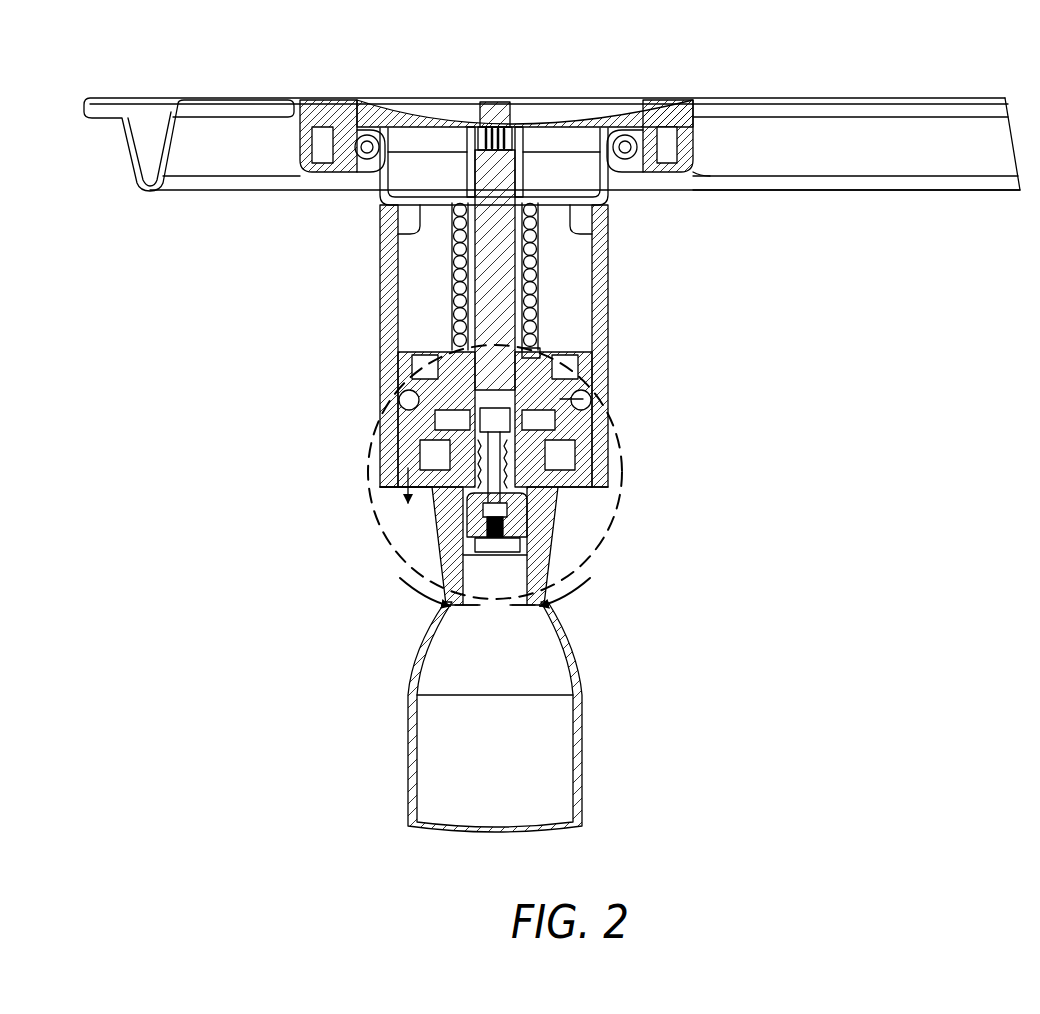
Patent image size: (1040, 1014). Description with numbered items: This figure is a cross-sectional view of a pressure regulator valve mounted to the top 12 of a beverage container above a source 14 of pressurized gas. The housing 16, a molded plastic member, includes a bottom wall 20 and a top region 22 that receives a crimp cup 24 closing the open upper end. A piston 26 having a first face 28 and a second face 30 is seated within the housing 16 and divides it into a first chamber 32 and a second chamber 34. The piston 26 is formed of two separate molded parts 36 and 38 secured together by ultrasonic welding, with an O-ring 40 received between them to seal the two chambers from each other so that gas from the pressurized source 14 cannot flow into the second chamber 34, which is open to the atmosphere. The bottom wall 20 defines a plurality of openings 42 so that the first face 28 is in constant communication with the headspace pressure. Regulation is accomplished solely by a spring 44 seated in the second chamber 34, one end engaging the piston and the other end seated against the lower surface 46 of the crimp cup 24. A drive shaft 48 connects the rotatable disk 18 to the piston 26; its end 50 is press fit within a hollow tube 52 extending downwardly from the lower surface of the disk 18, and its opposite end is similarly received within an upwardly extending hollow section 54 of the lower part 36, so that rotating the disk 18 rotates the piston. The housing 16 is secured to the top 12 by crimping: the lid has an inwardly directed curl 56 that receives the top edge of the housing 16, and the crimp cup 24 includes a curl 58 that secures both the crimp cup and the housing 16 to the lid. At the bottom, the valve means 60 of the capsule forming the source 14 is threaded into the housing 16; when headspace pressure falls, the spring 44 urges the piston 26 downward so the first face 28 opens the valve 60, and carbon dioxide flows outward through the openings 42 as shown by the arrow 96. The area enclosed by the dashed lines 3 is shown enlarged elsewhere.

The top of the container 12 is at (203, 97).
The source of pressurized gas 14 is at (582, 760).
The housing 16 is at (608, 292).
The rotatable disk 18 is at (632, 110).
The bottom wall 20 is at (567, 497).
The top region 22 is at (393, 150).
The crimp cup 24 is at (606, 241).
The piston 26 is at (595, 387).
The first face 28 is at (577, 430).
The second face 30 is at (563, 350).
The first chamber 32 is at (407, 453).
The second chamber 34 is at (415, 308).
The lower part of the piston 36 is at (400, 420).
The upper part of the piston 38 is at (405, 362).
The O-ring 40 is at (607, 403).
The openings 42 is at (383, 486).
The spring 44 is at (450, 268).
The lower surface of the crimp cup 46 is at (408, 243).
The drive shaft 48 is at (500, 247).
The end of the drive shaft 50 is at (507, 160).
The hollow tube 52 is at (467, 160).
The upwardly extending hollow section 54 is at (577, 140).
The inwardly directed curl 56 is at (370, 163).
The curl of the crimp cup 58 is at (331, 125).
The valve means 60 is at (462, 532).
The arrow 96 is at (412, 510).
The dashed lines 3- 3 is at (495, 489).